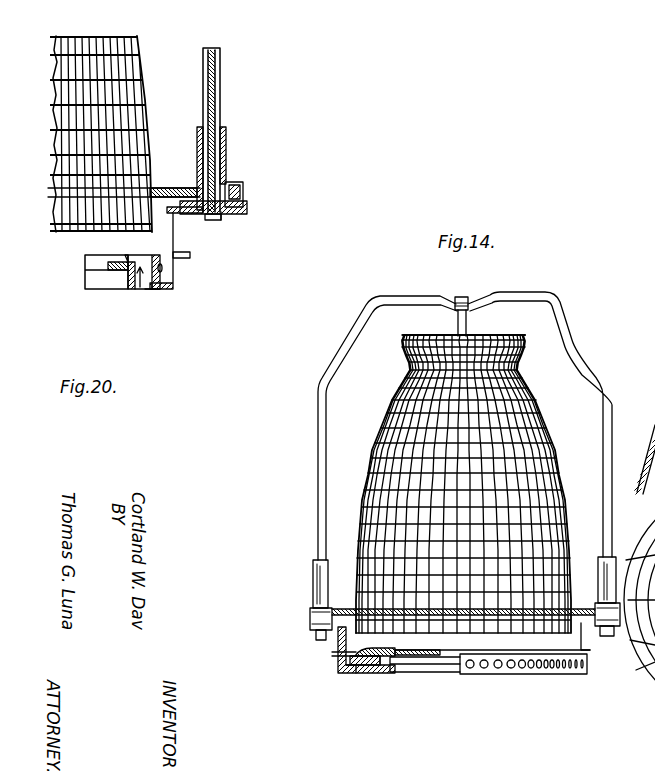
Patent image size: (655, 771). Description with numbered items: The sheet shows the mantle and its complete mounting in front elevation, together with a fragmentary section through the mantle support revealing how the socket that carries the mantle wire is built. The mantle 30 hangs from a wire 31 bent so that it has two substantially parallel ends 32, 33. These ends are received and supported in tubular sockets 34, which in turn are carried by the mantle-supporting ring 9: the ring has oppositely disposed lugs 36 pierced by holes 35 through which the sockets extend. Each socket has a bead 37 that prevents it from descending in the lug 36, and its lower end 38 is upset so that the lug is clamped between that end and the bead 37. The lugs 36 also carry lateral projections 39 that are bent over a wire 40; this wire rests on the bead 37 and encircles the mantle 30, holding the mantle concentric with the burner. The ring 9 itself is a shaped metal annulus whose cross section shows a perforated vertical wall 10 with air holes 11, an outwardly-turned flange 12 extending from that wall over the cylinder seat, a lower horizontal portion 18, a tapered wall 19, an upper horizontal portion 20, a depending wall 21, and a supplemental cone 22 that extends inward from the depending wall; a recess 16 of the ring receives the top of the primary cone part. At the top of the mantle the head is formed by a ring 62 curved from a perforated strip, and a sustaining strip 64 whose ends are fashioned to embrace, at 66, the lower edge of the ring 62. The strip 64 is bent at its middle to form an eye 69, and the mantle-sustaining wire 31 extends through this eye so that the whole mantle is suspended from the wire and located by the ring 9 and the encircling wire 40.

In FIG. 20, the mantle-supporting ring 9 is at (103, 286).
In FIG. 14, the mantle-supporting ring 9 is at (440, 673).
In FIG. 20, the vertical wall 10 is at (175, 280).
In FIG. 14, the vertical wall 10 is at (345, 673).
In FIG. 20, the air holes 11 is at (166, 268).
In FIG. 14, the air holes 11 is at (498, 675).
In FIG. 20, the outwardly-turned flange 12 is at (189, 253).
In FIG. 14, the outwardly-turned flange 12 is at (333, 656).
In FIG. 20, the recess 16 is at (141, 291).
In FIG. 14, the recess 16 is at (372, 666).
In FIG. 20, the lower horizontal portion 18 is at (150, 290).
In FIG. 14, the lower horizontal portion 18 is at (351, 667).
In FIG. 20, the tapered wall 19 is at (155, 291).
In FIG. 14, the tapered wall 19 is at (360, 670).
In FIG. 20, the upper horizontal portion 20 is at (138, 258).
In FIG. 14, the upper horizontal portion 20 is at (372, 651).
In FIG. 20, the depending wall 21 is at (134, 272).
In FIG. 14, the depending wall 21 is at (380, 667).
In FIG. 20, the supplemental cone 22 is at (117, 262).
In FIG. 14, the supplemental cone 22 is at (400, 652).
In FIG. 14, the mantle 30 is at (362, 438).
In FIG. 14, the wire 31 is at (318, 386).
In FIG. 20, the end of wire 32 is at (221, 66).
In FIG. 14, the end of wire 32 is at (612, 521).
In FIG. 14, the end of wire 33 is at (312, 557).
In FIG. 20, the tubular sockets 34 is at (226, 140).
In FIG. 14, the tubular sockets 34 is at (312, 606).
In FIG. 20, the holes 35 is at (224, 216).
In FIG. 20, the lugs 36 is at (247, 207).
In FIG. 14, the lugs 36 is at (334, 641).
In FIG. 20, the bead 37 is at (244, 192).
In FIG. 20, the lower end of socket 38 is at (225, 214).
In FIG. 20, the lateral projections 39 is at (243, 185).
In FIG. 14, the lateral projections 39 is at (309, 620).
In FIG. 20, the wire 40 is at (171, 187).
In FIG. 14, the ring 62 is at (432, 334).
In FIG. 14, the sustaining strip 64 is at (468, 325).
In FIG. 14, the embracing point 66 is at (646, 432).
In FIG. 14, the eye 69 is at (467, 298).